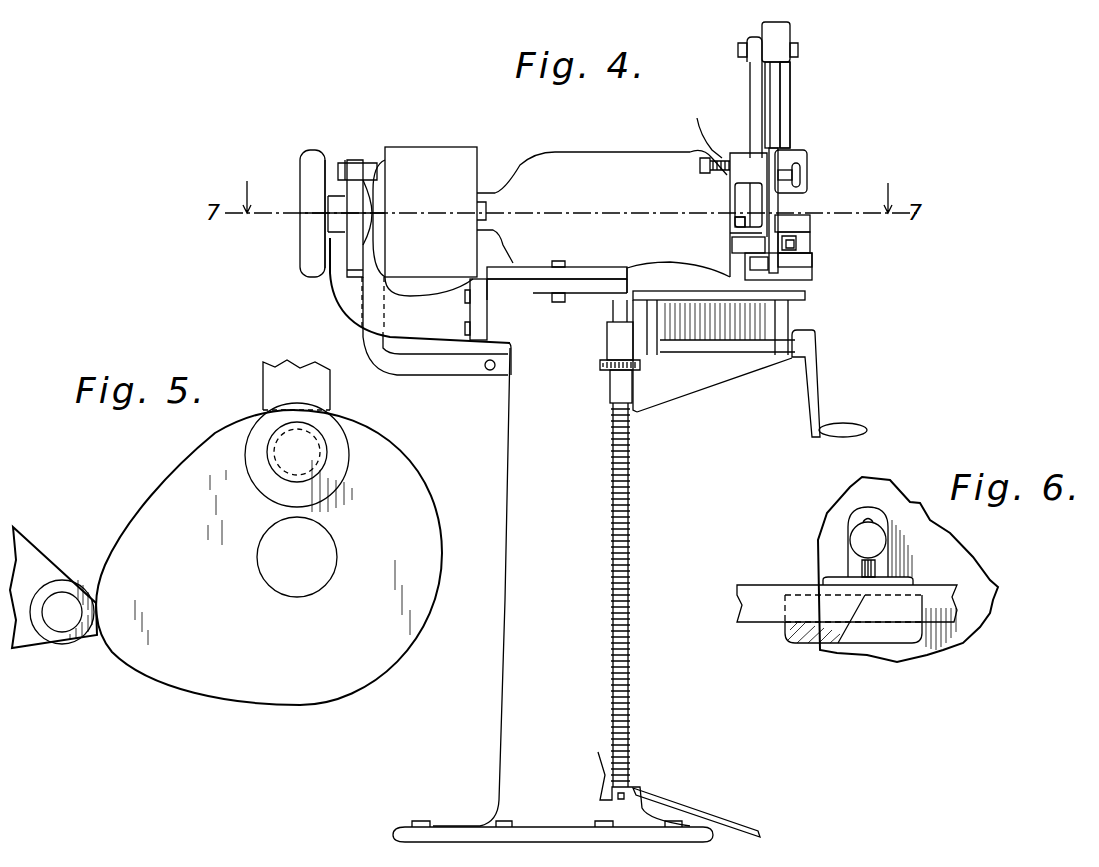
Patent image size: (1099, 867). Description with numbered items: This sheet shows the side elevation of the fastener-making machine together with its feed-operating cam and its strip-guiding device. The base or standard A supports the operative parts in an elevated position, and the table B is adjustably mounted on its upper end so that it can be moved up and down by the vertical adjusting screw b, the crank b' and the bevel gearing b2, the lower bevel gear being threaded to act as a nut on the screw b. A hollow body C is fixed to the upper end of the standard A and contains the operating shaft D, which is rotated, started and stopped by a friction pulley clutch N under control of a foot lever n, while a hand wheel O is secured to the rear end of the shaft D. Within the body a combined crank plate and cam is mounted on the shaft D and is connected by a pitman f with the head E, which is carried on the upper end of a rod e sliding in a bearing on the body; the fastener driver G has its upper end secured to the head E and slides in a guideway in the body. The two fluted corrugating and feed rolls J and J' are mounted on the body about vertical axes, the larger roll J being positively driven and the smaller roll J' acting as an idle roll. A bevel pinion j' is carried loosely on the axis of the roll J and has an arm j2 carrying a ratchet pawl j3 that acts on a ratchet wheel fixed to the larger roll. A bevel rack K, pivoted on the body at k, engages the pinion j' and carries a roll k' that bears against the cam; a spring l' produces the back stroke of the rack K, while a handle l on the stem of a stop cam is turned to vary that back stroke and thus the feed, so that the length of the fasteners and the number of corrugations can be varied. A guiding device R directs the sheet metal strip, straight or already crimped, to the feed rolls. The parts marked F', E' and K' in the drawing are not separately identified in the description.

In FIG. 4, the hand wheel O is at (311, 160).
In FIG. 4, the friction pulley clutch N is at (417, 153).
In FIG. 4, the hollow body C is at (537, 158).
In FIG. 4, the base or standard A is at (516, 695).
In FIG. 4, the vertical adjusting screw b is at (642, 595).
In FIG. 4, the foot lever n is at (737, 820).
In FIG. 4, the bevel gearing b2 is at (640, 367).
In FIG. 4, the crank b' is at (807, 383).
In FIG. 4, the table B is at (818, 335).
In FIG. 4, the ratchet pawl j3 is at (745, 243).
In FIG. 4, the head E is at (791, 42).
In FIG. 4, the fastener driver G is at (775, 88).
In FIG. 4, the pitman f is at (756, 85).
In FIG. 5, the pitman f is at (283, 373).
In FIG. 4, the rod e is at (790, 125).
In FIG. 4, the knob F' is at (795, 157).
In FIG. 4, the handle l is at (808, 188).
In FIG. 4, the bevel rack K is at (789, 215).
In FIG. 4, the pivot k is at (715, 145).
In FIG. 4, the spring l' is at (704, 124).
In FIG. 4, the roll k' is at (697, 172).
In FIG. 4, the arm j2 is at (732, 233).
In FIG. 4, the bevel pinion j' is at (810, 237).
In FIG. 4, the guiding device R is at (813, 257).
In FIG. 6, the guiding device R is at (847, 580).
In FIG. 4, the smaller feed roll J' is at (801, 277).
In FIG. 4, the larger feed roll J is at (829, 282).
In FIG. 5, the cam disc E' is at (261, 557).
In FIG. 5, the operating shaft D is at (333, 537).
In FIG. 5, the bracket ring K' is at (53, 619).